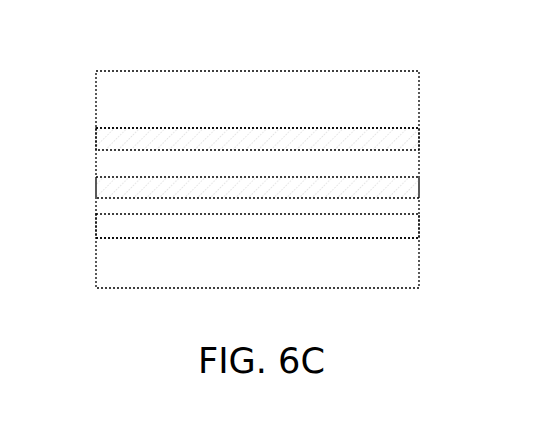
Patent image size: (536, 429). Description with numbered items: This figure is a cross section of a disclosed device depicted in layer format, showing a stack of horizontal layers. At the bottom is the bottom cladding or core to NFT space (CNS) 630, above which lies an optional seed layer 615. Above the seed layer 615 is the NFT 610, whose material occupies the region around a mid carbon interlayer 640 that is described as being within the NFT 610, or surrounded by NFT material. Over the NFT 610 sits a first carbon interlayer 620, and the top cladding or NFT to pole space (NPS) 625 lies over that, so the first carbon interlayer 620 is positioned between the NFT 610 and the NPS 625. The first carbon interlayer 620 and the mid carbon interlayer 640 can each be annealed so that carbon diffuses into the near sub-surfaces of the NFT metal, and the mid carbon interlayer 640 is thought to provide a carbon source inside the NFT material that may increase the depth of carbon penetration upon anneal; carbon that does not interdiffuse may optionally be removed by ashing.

The NFT 610 is at (101, 191).
The NFT to pole space (NPS) 625 is at (240, 108).
The first carbon interlayer 620 is at (240, 148).
The mid carbon interlayer 640 is at (240, 196).
The seed layer 615 is at (240, 236).
The core to NFT space (CNS) 630 is at (240, 273).